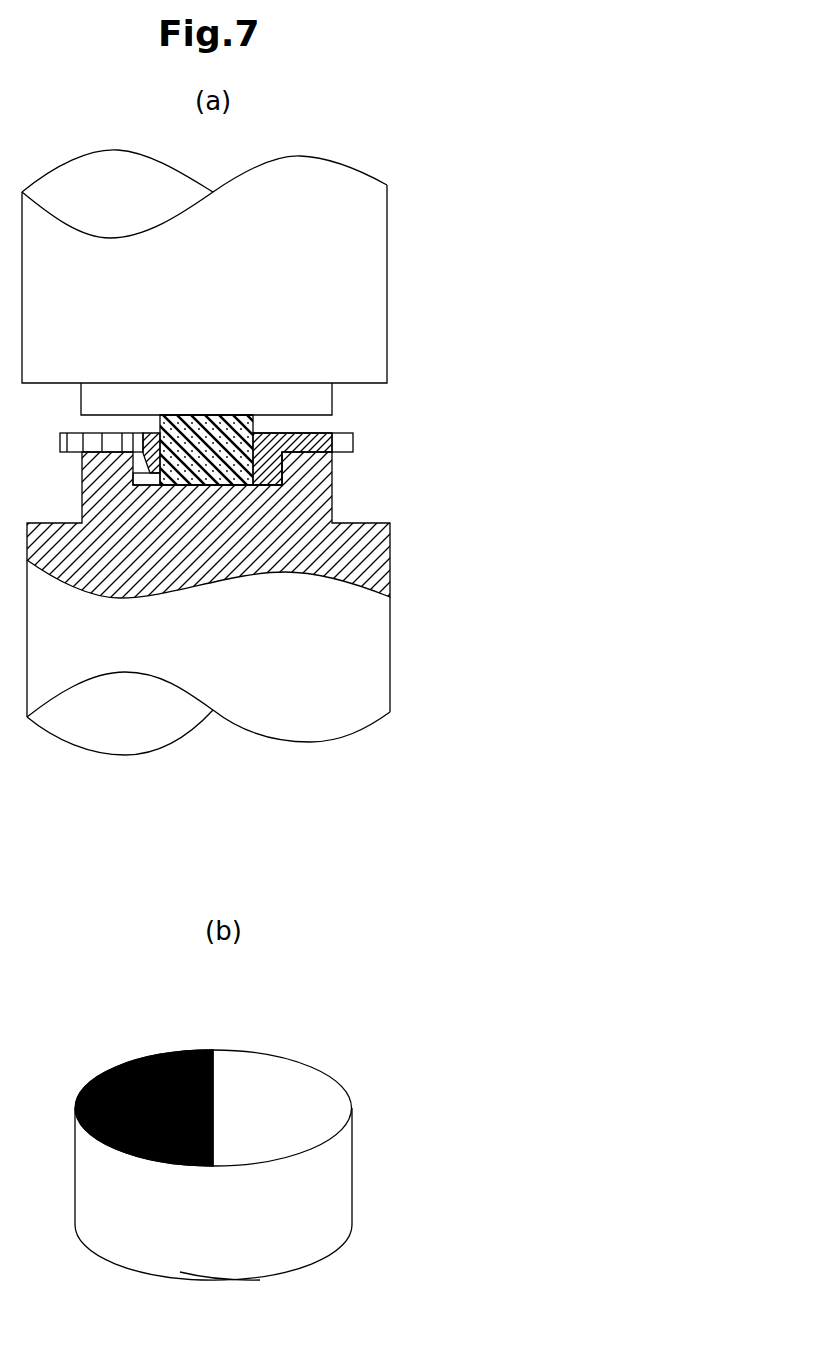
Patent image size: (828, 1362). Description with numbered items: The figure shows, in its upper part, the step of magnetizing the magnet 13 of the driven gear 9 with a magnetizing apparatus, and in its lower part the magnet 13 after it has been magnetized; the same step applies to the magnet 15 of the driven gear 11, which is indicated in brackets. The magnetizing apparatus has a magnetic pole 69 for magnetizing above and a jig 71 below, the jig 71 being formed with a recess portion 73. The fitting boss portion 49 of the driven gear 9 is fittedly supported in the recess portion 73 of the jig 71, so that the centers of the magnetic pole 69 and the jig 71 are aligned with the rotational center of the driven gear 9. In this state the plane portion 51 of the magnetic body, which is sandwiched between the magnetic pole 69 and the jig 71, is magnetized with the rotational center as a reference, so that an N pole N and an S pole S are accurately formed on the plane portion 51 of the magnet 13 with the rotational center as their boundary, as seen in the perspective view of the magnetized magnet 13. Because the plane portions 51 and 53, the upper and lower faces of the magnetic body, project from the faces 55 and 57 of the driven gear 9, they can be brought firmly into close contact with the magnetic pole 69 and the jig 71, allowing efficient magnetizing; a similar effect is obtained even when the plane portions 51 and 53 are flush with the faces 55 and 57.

In FIG. 7A, the magnetic pole 69 is at (372, 240).
In FIG. 7A, the jig 71 is at (377, 673).
In FIG. 7A, the magnet 13 is at (329, 408).
In FIG. 7B, the magnet 13 is at (287, 1165).
In FIG. 7A, the magnet 15 is at (243, 415).
In FIG. 7B, the magnet 15 is at (352, 1147).
In FIG. 7A, the plane portion 51 is at (185, 414).
In FIG. 7B, the plane portion 51 is at (262, 1070).
In FIG. 7A, the plane portion 53 is at (167, 503).
In FIG. 7B, the plane portion 53 is at (260, 1278).
In FIG. 7A, the driven gear 9 is at (276, 434).
In FIG. 7A, the driven gear 11 is at (357, 438).
In FIG. 7A, the recess portion 73 is at (285, 431).
In FIG. 7A, the fitting boss portion 49 is at (285, 462).
In FIG. 7A, the face 57 is at (283, 490).
In FIG. 7A, the face 55 is at (258, 431).
In FIG. 7B, the S pole S is at (135, 1062).
In FIG. 7B, the N pole N is at (303, 1100).